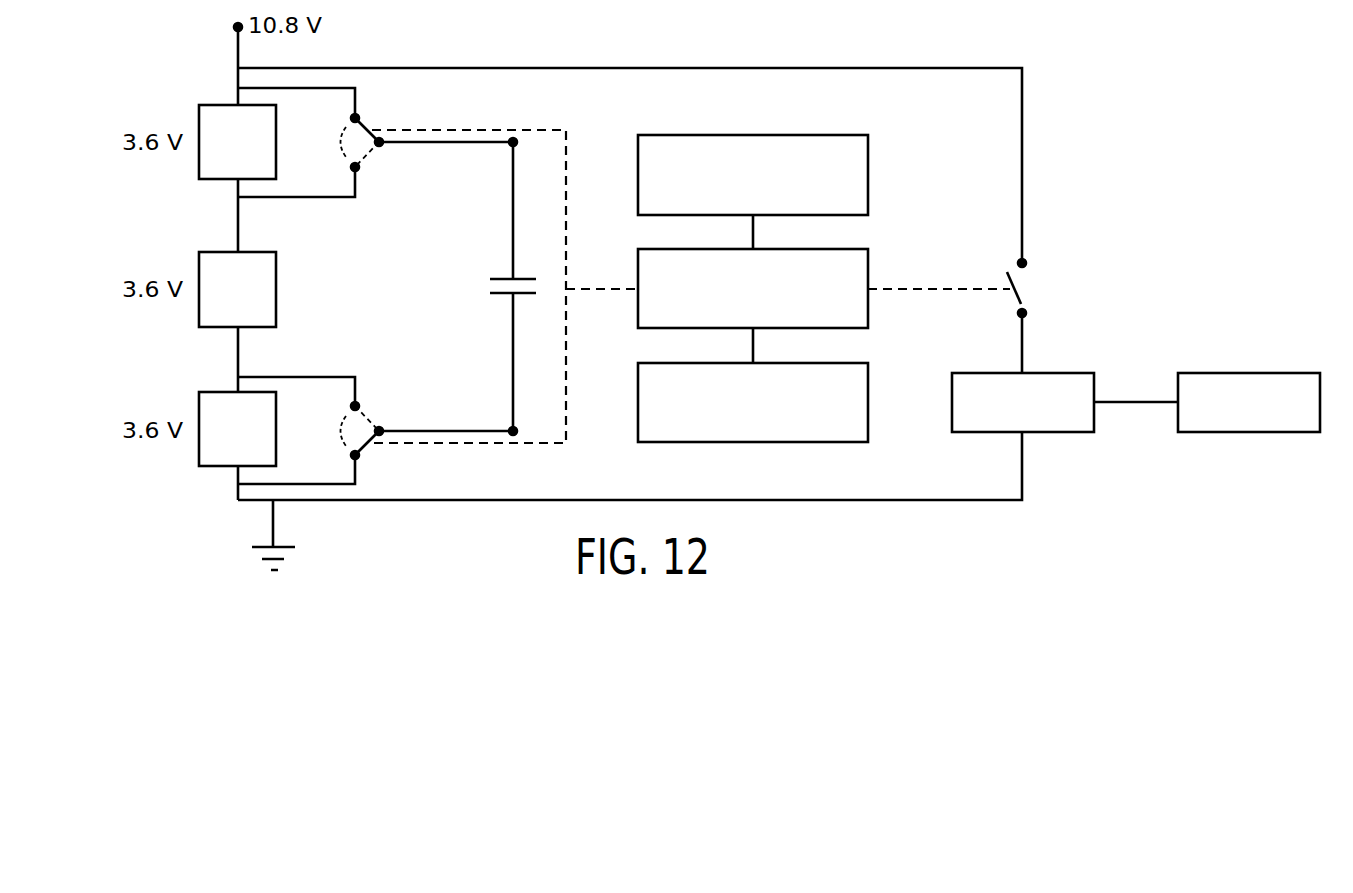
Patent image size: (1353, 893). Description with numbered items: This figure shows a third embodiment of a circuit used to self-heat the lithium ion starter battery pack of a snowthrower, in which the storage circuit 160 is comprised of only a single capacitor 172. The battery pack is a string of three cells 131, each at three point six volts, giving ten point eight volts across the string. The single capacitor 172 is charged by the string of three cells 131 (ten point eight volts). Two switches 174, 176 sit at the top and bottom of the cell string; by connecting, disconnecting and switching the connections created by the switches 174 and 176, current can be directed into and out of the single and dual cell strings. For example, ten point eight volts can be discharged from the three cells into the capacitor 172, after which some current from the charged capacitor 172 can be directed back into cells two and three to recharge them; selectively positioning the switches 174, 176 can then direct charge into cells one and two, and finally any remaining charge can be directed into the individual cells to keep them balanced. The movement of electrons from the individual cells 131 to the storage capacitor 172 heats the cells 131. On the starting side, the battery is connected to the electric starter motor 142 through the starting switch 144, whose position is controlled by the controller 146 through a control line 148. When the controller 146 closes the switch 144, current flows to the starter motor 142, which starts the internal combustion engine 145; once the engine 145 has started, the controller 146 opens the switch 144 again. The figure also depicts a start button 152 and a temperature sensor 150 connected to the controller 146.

The cells 131 is at (253, 180).
The electric starter motor 142 is at (1053, 432).
The starting switch 144 is at (1019, 302).
The internal combustion engine 145 is at (1248, 373).
The controller 146 is at (868, 275).
The control line 148 is at (895, 290).
The temperature sensor 150 is at (868, 403).
The start button 152 is at (868, 173).
The storage circuit 160 is at (541, 223).
The capacitor 172 is at (504, 277).
The switch 174 is at (363, 122).
The switch 176 is at (363, 446).